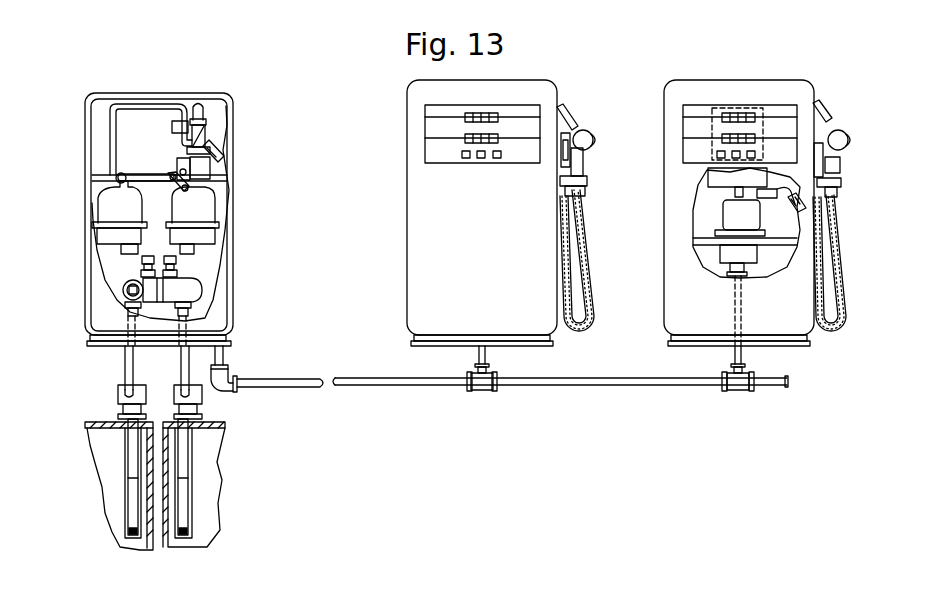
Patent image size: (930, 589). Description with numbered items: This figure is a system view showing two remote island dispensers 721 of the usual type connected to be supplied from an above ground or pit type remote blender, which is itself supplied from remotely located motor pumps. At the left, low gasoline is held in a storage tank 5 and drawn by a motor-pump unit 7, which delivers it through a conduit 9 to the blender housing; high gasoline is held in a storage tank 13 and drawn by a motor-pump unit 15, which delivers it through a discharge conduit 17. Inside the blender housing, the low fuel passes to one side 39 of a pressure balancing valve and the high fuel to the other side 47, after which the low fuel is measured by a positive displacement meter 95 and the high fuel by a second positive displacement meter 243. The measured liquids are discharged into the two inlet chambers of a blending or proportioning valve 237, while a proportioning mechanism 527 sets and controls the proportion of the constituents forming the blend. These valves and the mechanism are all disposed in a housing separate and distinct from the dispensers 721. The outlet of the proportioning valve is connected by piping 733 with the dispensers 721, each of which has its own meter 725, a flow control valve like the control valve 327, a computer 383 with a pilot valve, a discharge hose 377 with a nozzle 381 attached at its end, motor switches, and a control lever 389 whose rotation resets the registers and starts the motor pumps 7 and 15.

The storage tank 5 is at (107, 421).
The motor-pump unit 7 is at (133, 464).
The conduit 9 is at (125, 362).
The storage tank 13 is at (204, 493).
The motor-pump unit 15 is at (184, 449).
The discharge conduit 17 is at (181, 362).
The pressure balancing valve side 39 is at (133, 283).
The pressure balancing valve side 47 is at (175, 291).
The positive displacement meter 95 is at (118, 210).
The blending or proportioning valve 237 is at (203, 135).
The second positive displacement liquid meter 243 is at (197, 204).
The flow control valve 327 is at (781, 209).
The discharge hose 377 is at (588, 247).
The nozzle 381 is at (580, 166).
The computer 383 is at (755, 128).
The control lever 389 is at (573, 136).
The proportioning mechanism 527 is at (150, 174).
The dispenser 721 is at (412, 113).
The meter 725 is at (725, 223).
The piping 733 is at (481, 353).